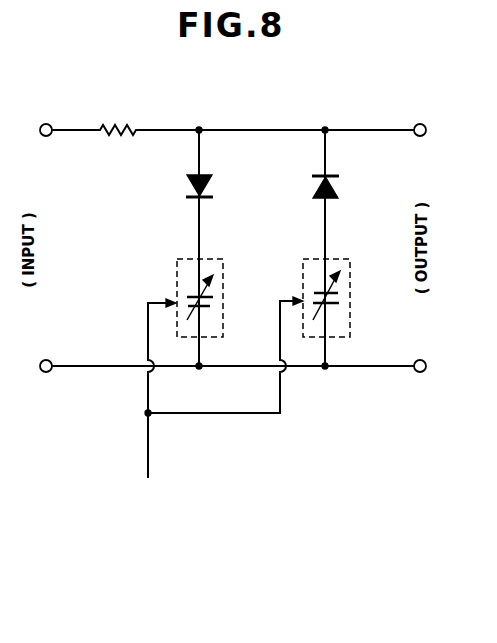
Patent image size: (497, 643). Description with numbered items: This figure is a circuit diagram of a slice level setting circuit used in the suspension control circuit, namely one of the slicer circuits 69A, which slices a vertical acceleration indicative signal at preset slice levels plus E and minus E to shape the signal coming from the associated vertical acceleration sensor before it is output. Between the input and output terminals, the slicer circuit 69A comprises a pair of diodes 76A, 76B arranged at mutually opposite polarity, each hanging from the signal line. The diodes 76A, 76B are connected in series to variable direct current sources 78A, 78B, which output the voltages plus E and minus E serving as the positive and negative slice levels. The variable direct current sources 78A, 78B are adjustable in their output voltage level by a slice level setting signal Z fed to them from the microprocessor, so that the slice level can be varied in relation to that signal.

The slicer circuit 69A is at (287, 122).
The diode 76A is at (188, 190).
The diode 76B is at (313, 192).
The variable direct current source 78A is at (176, 278).
The variable direct current source 78B is at (303, 272).